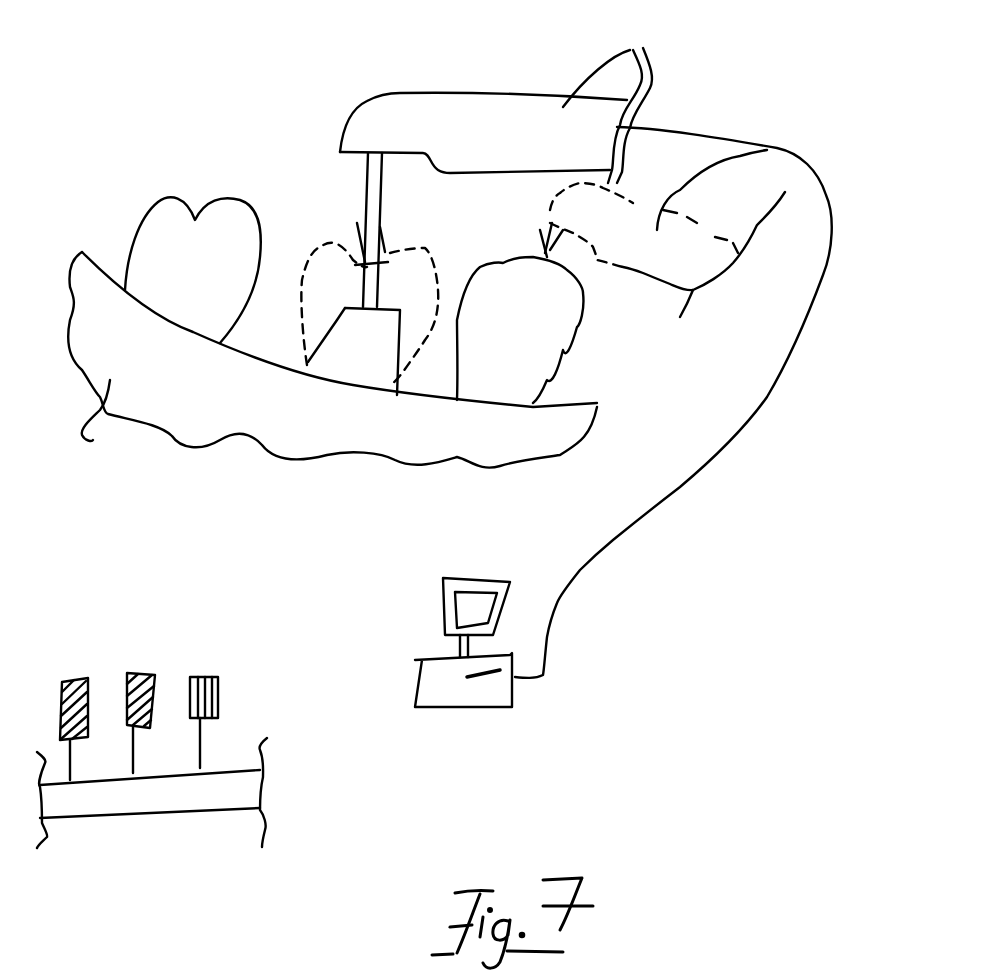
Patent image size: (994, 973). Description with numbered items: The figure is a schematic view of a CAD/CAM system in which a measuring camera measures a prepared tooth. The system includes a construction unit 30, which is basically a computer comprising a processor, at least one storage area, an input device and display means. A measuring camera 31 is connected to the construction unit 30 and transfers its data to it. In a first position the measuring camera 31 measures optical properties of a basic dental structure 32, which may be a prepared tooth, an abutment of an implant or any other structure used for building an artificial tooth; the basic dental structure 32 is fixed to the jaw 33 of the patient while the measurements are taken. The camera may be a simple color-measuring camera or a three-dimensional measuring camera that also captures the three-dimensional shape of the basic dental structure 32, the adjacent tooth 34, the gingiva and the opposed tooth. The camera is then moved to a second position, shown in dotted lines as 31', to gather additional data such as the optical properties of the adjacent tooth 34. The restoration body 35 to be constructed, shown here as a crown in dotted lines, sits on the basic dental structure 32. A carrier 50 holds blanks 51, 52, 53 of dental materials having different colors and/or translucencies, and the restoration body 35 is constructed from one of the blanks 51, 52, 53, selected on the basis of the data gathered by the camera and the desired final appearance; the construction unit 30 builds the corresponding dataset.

The construction unit 30 is at (500, 697).
The measuring camera 31 is at (531, 95).
The measuring camera in second position 31' is at (673, 383).
The basic dental structure 32 is at (353, 370).
The jaw 33 is at (332, 370).
The adjacent tooth 34 is at (520, 380).
The restoration body 35 is at (325, 270).
The carrier 50 is at (242, 797).
The blank 51 is at (63, 682).
The blank 52 is at (130, 673).
The blank 53 is at (207, 677).